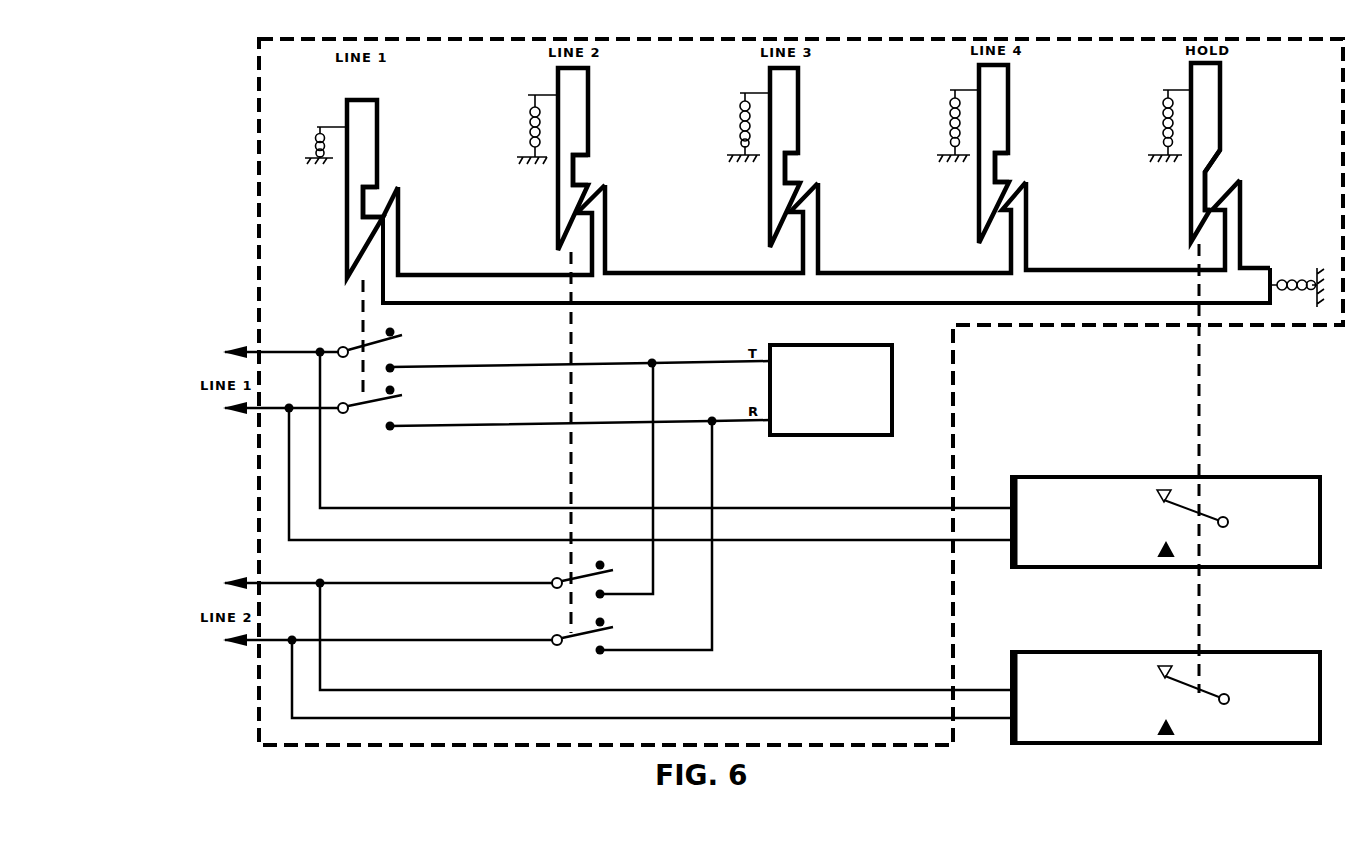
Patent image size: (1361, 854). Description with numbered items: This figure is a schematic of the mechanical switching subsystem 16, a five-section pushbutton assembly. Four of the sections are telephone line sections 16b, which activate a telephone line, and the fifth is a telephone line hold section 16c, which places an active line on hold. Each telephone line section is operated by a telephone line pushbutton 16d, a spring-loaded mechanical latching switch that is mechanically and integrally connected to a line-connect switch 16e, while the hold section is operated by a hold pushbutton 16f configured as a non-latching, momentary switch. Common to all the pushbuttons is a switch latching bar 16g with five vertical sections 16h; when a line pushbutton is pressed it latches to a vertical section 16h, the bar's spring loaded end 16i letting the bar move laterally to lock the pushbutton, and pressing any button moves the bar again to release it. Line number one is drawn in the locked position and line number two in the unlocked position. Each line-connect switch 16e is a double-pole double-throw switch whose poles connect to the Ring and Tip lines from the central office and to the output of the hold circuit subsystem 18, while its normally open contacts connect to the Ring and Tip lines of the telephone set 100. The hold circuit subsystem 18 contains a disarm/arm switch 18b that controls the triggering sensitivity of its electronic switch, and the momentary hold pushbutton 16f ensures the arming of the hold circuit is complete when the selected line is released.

The switching subsystem 16 is at (801, 393).
The telephone line section 16b is at (396, 100).
The telephone line hold section 16c is at (1240, 100).
The telephone line pushbutton 16d is at (375, 156).
The line-connect switch 16e is at (356, 428).
The hold pushbutton 16f is at (1215, 143).
The switch latching bar 16g is at (741, 294).
The vertical section 16h is at (397, 248).
The spring loaded end 16i is at (1286, 276).
The hold circuit subsystem 18 is at (1166, 620).
The disarm/arm switch 18b is at (1164, 530).
The telephone set 100 is at (832, 390).